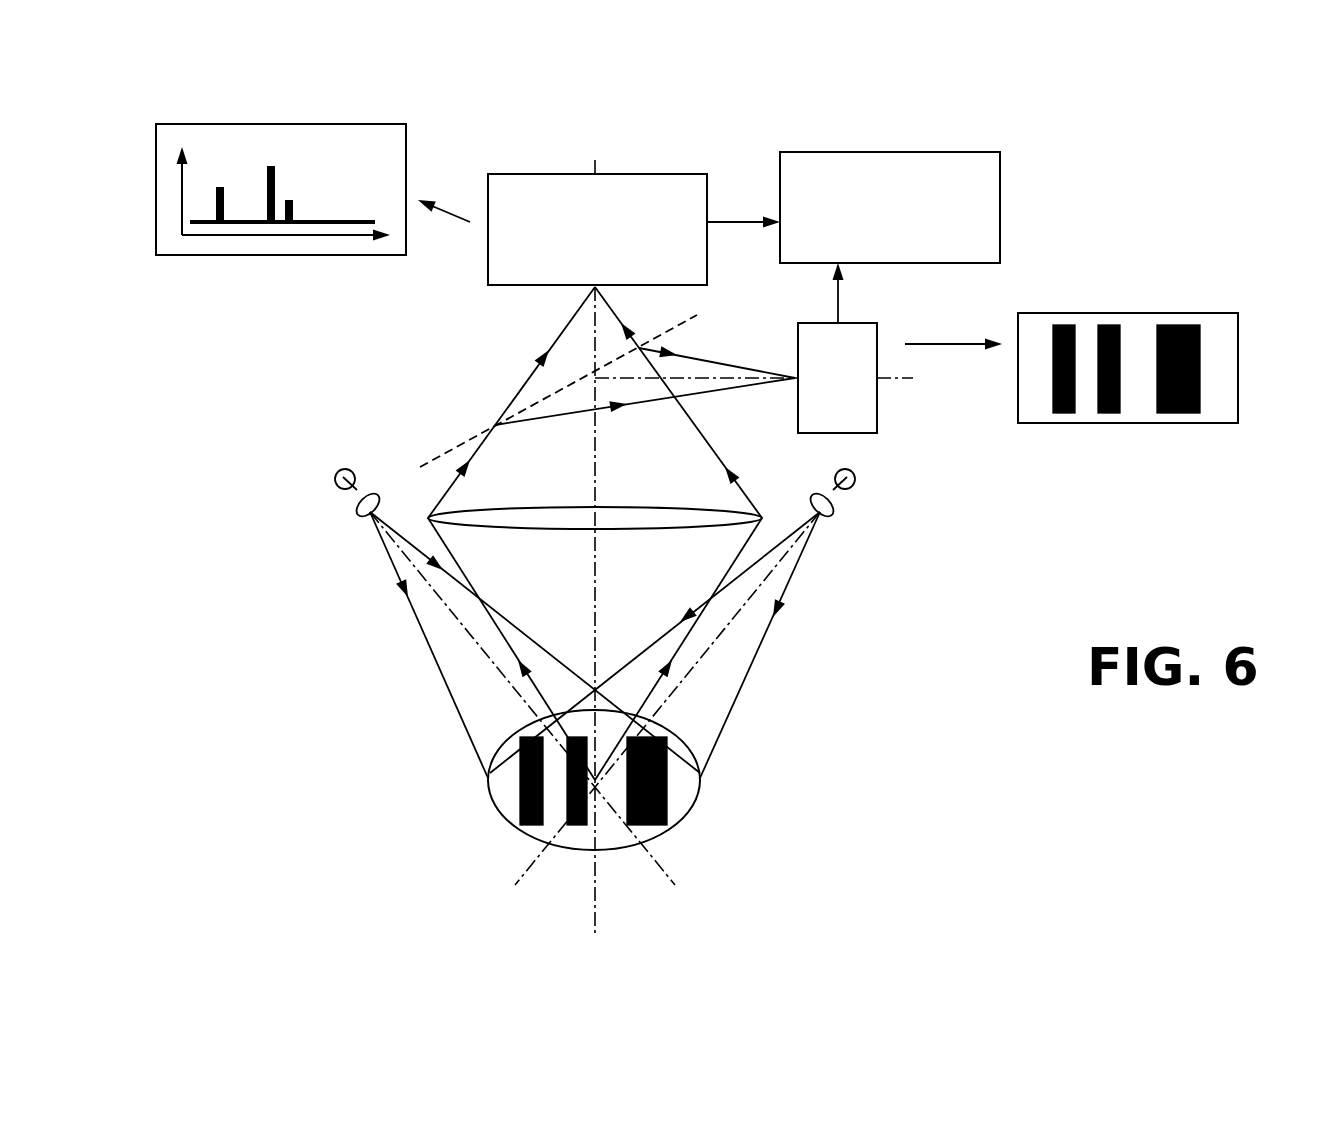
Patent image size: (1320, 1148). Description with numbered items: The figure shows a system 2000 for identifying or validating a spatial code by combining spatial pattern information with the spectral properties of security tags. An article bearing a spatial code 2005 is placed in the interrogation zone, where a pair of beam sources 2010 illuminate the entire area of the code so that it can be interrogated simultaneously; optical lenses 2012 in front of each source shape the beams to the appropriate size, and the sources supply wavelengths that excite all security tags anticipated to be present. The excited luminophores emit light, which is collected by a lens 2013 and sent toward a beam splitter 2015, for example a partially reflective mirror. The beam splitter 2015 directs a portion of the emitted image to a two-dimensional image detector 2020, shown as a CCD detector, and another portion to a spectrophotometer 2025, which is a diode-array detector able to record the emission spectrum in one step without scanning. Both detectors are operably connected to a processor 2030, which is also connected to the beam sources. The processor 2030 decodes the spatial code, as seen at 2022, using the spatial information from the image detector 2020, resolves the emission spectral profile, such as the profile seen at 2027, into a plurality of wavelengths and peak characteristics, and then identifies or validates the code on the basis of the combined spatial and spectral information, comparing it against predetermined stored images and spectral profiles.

The system 2000 is at (870, 812).
The spatial code 2005 is at (500, 813).
The beam sources 2010 is at (337, 473).
The optical lenses 2012 is at (360, 515).
The lens 2013 is at (542, 530).
The beam splitter 2015 is at (463, 443).
The image detector 2020 is at (877, 413).
The decoded spatial code 2022 is at (1143, 313).
The spectrophotometer 2025 is at (549, 174).
The emission spectral profile 2027 is at (238, 124).
The processor 2030 is at (927, 152).